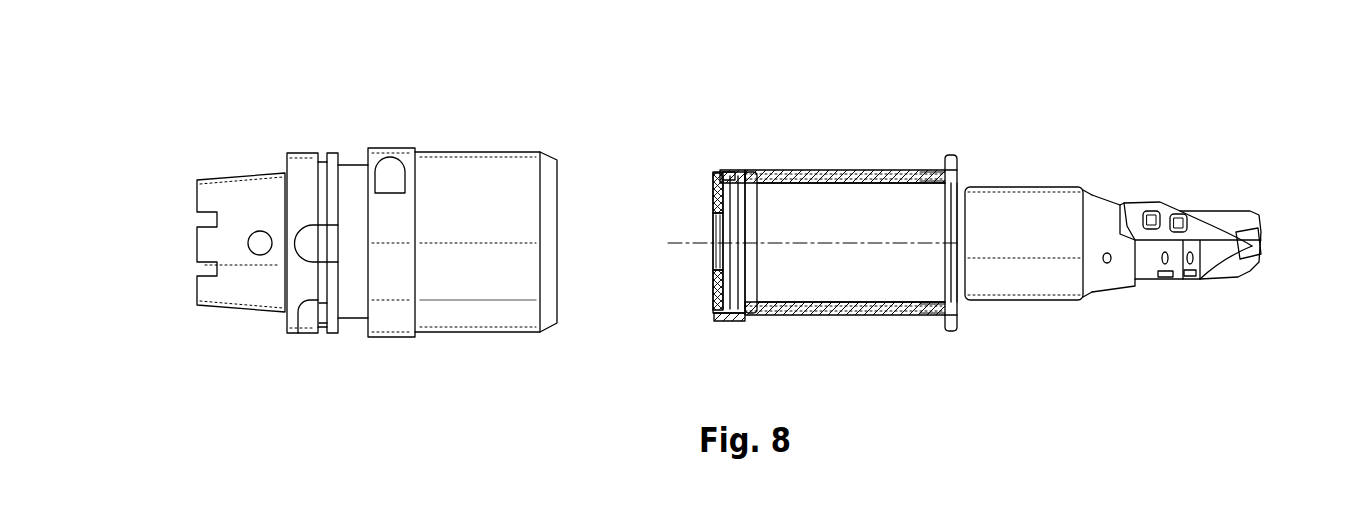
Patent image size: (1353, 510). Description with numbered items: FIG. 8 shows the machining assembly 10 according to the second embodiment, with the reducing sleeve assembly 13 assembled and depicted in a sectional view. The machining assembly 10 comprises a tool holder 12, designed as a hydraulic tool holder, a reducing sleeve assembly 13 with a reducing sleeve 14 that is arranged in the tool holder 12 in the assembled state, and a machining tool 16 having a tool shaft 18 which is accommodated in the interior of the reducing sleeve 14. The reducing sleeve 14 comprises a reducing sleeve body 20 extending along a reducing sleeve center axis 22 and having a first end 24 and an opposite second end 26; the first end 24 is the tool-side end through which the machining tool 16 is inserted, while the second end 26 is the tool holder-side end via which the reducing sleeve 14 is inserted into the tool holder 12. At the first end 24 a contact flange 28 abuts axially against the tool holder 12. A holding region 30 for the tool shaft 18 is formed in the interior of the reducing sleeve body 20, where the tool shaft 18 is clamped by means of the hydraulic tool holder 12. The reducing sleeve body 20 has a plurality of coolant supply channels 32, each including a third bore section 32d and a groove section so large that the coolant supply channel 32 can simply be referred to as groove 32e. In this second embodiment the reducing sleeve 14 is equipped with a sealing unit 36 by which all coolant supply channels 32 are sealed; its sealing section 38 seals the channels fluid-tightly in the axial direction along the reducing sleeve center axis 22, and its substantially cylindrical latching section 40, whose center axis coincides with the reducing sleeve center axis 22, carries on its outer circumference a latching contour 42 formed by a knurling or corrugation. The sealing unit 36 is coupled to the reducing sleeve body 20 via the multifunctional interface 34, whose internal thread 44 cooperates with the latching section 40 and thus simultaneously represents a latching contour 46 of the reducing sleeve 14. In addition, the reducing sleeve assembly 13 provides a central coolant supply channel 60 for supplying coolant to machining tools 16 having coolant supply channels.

The machining assembly 10 is at (1205, 106).
The tool holder 12 is at (460, 147).
The reducing sleeve assembly 13 is at (896, 158).
The reducing sleeve 14 is at (788, 318).
The machining tool 16 is at (1124, 158).
The tool shaft 18 is at (1051, 182).
The reducing sleeve body 20 is at (838, 233).
The reducing sleeve center axis 22 is at (690, 244).
The first end 24 is at (963, 162).
The second end 26 is at (756, 233).
The contact flange 28 is at (950, 332).
The holding region 30 is at (938, 265).
The coolant supply channel 32 is at (872, 318).
The third bore section 32d is at (944, 165).
The groove 32e is at (789, 166).
The multifunctional interface 34 is at (740, 163).
The sealing unit 36 is at (712, 201).
The sealing section 38 is at (718, 322).
The latching section 40 is at (735, 175).
The latching contour 42 is at (731, 320).
The internal thread 44 is at (718, 193).
The latching contour 46 is at (712, 292).
The central coolant supply channel 60 is at (713, 232).